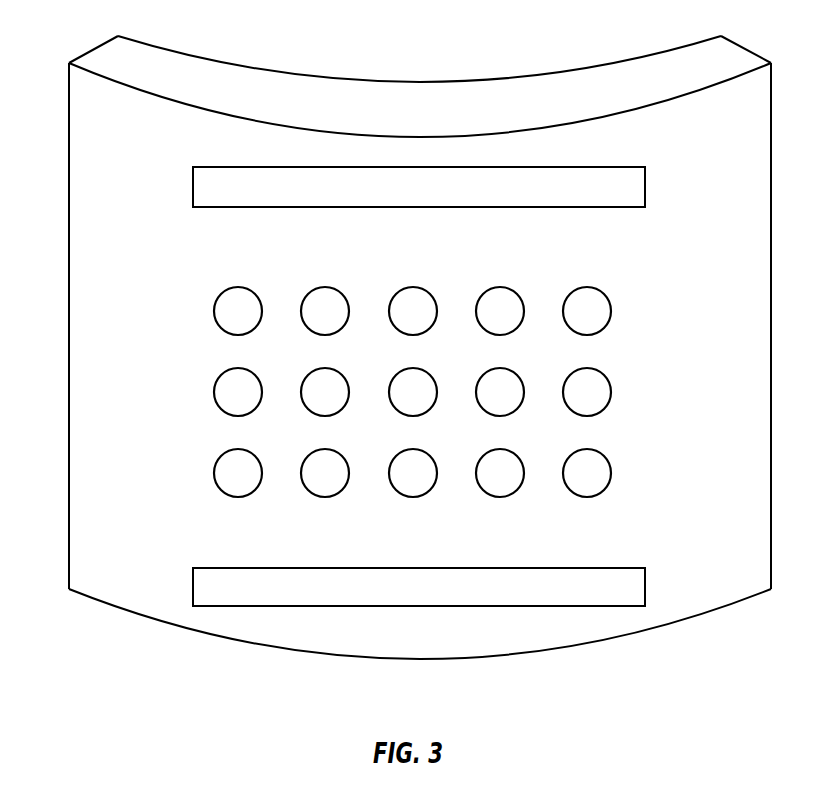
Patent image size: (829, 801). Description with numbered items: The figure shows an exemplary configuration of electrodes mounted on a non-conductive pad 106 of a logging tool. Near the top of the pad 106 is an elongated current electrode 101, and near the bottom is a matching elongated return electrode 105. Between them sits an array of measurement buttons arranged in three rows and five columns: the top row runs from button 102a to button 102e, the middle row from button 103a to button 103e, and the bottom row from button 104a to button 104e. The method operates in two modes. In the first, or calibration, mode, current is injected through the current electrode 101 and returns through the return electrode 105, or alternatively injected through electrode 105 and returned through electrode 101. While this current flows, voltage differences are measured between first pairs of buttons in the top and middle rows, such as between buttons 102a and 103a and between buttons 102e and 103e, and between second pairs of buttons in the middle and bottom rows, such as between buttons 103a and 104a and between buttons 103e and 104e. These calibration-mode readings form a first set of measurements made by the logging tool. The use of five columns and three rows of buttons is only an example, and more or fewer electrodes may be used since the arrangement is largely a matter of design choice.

The pad 106 is at (100, 46).
The current electrode 101 is at (193, 180).
The return electrode 105 is at (193, 580).
The measurement button 102a is at (214, 308).
The measurement button 102e is at (611, 309).
The measurement button 103a is at (214, 389).
The measurement button 103e is at (611, 390).
The measurement button 104a is at (214, 471).
The measurement button 104e is at (611, 471).